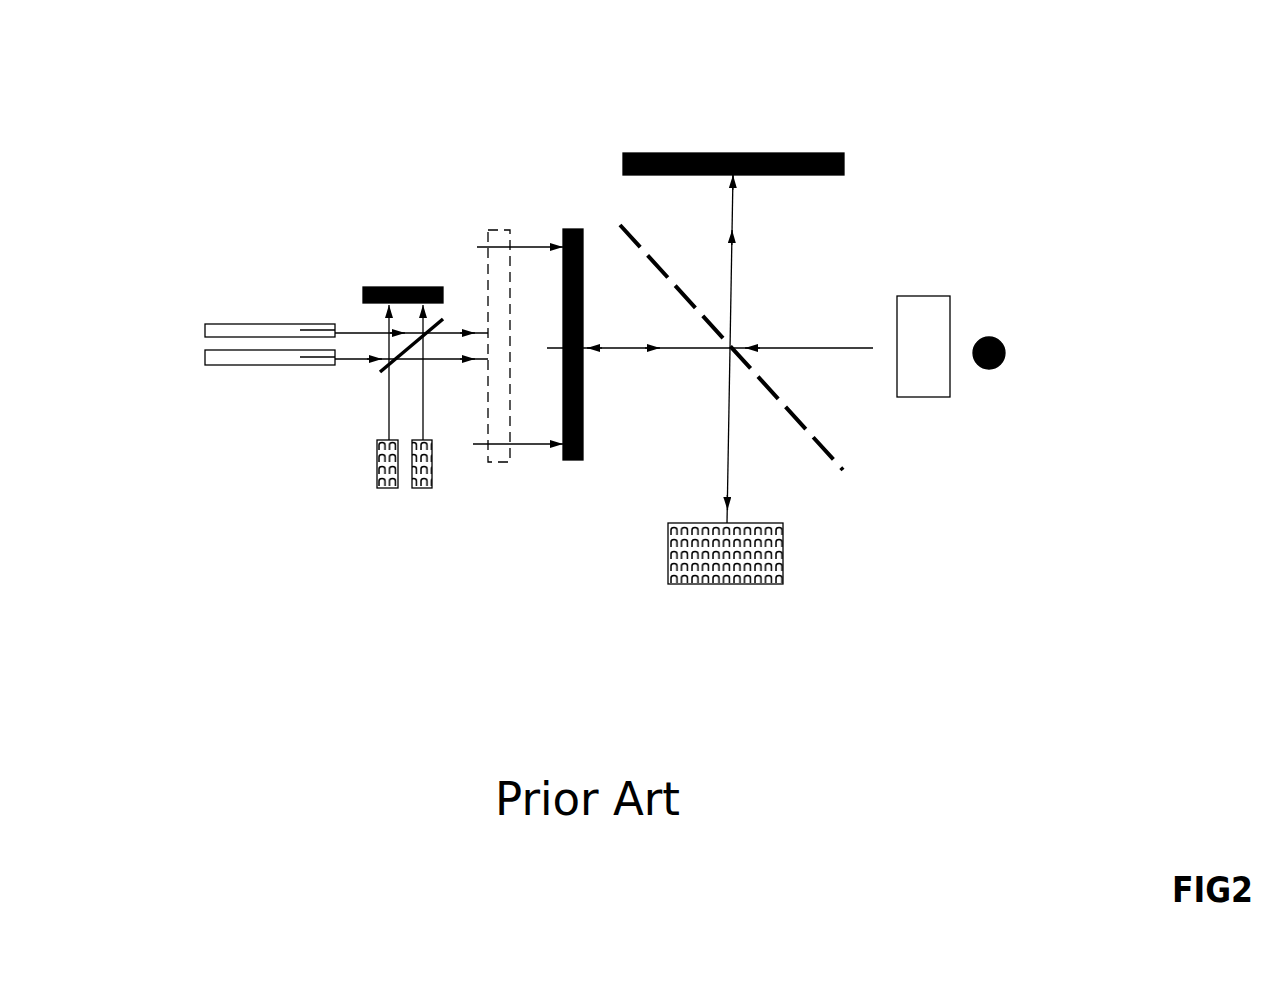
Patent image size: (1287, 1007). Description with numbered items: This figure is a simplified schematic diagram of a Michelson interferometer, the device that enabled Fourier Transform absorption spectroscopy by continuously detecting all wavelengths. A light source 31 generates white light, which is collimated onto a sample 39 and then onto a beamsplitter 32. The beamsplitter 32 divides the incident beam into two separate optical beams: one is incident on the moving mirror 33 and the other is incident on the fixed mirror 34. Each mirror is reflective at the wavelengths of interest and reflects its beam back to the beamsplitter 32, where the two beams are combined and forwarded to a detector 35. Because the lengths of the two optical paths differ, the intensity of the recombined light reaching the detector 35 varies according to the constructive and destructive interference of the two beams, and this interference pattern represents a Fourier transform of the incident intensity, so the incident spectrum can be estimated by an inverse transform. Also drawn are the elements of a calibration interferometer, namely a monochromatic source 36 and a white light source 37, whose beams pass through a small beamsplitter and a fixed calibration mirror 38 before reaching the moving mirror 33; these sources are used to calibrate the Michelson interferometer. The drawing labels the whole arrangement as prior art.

The light source 31 is at (1238, 439).
The beamsplitter 32 is at (1108, 541).
The moving mirror 33 is at (580, 463).
The fixed mirror 34 is at (1063, 78).
The detector 35 is at (783, 568).
The monochromatic light source 36 is at (528, 218).
The white light source 37 is at (223, 372).
The fixed calibration mirror 38 is at (771, 82).
The sample 39 is at (953, 312).